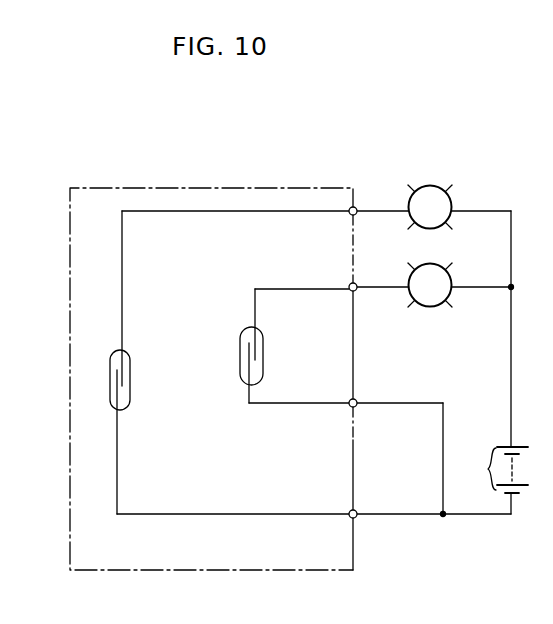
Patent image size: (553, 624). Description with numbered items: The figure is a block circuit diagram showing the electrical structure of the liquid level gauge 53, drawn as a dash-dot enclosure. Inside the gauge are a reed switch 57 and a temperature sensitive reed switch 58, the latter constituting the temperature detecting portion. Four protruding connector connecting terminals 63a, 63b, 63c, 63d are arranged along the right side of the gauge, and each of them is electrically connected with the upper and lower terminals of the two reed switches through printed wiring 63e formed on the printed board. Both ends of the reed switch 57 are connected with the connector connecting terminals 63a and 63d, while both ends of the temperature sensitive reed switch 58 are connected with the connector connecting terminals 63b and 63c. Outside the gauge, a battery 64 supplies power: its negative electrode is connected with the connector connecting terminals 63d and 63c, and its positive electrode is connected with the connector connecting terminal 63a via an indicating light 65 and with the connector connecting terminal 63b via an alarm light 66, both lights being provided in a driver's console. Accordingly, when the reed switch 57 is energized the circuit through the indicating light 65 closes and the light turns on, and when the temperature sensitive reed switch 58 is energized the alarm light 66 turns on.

The liquid level gauge 53 is at (190, 186).
The reed switch 57 is at (129, 356).
The temperature sensitive reed switch 58 is at (240, 342).
The connector connecting terminal 63a is at (357, 205).
The connector connecting terminal 63b is at (357, 283).
The connector connecting terminal 63c is at (358, 400).
The connector connecting terminal 63d is at (358, 511).
The printed wiring 63e is at (310, 213).
The battery 64 is at (495, 470).
The indicating light 65 is at (452, 192).
The alarm light 66 is at (452, 270).